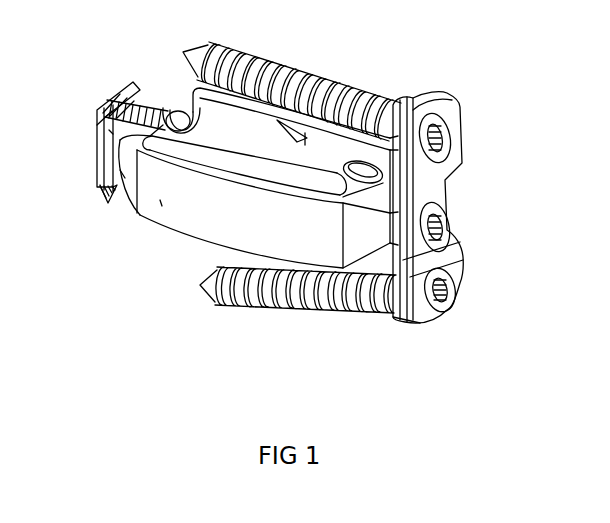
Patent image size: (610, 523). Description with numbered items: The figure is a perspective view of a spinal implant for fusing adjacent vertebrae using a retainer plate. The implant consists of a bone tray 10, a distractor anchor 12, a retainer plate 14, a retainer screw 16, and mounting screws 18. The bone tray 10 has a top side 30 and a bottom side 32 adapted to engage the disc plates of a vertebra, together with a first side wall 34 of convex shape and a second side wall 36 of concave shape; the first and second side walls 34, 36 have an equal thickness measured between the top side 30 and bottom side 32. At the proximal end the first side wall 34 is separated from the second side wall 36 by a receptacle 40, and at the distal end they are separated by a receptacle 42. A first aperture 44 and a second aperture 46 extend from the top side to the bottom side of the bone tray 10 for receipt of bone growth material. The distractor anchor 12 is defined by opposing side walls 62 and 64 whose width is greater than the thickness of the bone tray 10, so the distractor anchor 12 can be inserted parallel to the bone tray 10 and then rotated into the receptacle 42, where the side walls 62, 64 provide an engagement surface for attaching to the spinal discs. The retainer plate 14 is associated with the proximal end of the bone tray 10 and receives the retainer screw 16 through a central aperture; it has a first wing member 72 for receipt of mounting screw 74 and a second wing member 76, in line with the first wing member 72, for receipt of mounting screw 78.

The bone tray 10 is at (168, 205).
The distractor anchor 12 is at (97, 175).
The retainer plate 14 is at (427, 323).
The retainer screw 16 is at (443, 202).
The mounting screws 18 is at (310, 305).
The top side 30 is at (248, 135).
The bottom side 32 is at (138, 214).
The first side wall 34 is at (197, 216).
The second side wall 36 is at (232, 88).
The receptacle 40 is at (353, 167).
The receptacle 42 is at (182, 115).
The first aperture 44 is at (245, 170).
The second aperture 46 is at (320, 137).
The side wall 62 is at (142, 100).
The side wall 64 is at (118, 133).
The first wing member 72 is at (445, 97).
The mounting screw 74 is at (440, 130).
The second wing member 76 is at (458, 257).
The mounting screw 78 is at (453, 292).